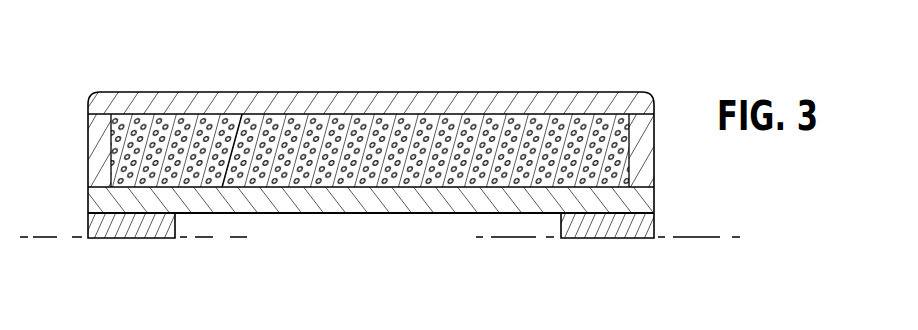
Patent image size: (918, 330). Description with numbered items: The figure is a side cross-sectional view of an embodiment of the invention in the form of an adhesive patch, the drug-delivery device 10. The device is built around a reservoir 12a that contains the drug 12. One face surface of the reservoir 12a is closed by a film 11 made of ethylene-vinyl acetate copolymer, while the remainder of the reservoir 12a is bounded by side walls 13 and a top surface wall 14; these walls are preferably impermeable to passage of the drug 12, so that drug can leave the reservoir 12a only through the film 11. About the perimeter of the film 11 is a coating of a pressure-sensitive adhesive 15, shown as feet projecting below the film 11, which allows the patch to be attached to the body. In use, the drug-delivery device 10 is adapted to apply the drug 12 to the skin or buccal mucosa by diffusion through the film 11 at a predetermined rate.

The drug-delivery device 10 is at (380, 243).
The film 11 is at (328, 213).
The drug 12 is at (268, 187).
The reservoir 12a is at (222, 187).
The side walls 13 is at (97, 146).
The top surface wall 14 is at (473, 98).
The pressure-sensitive adhesive 15 is at (135, 228).